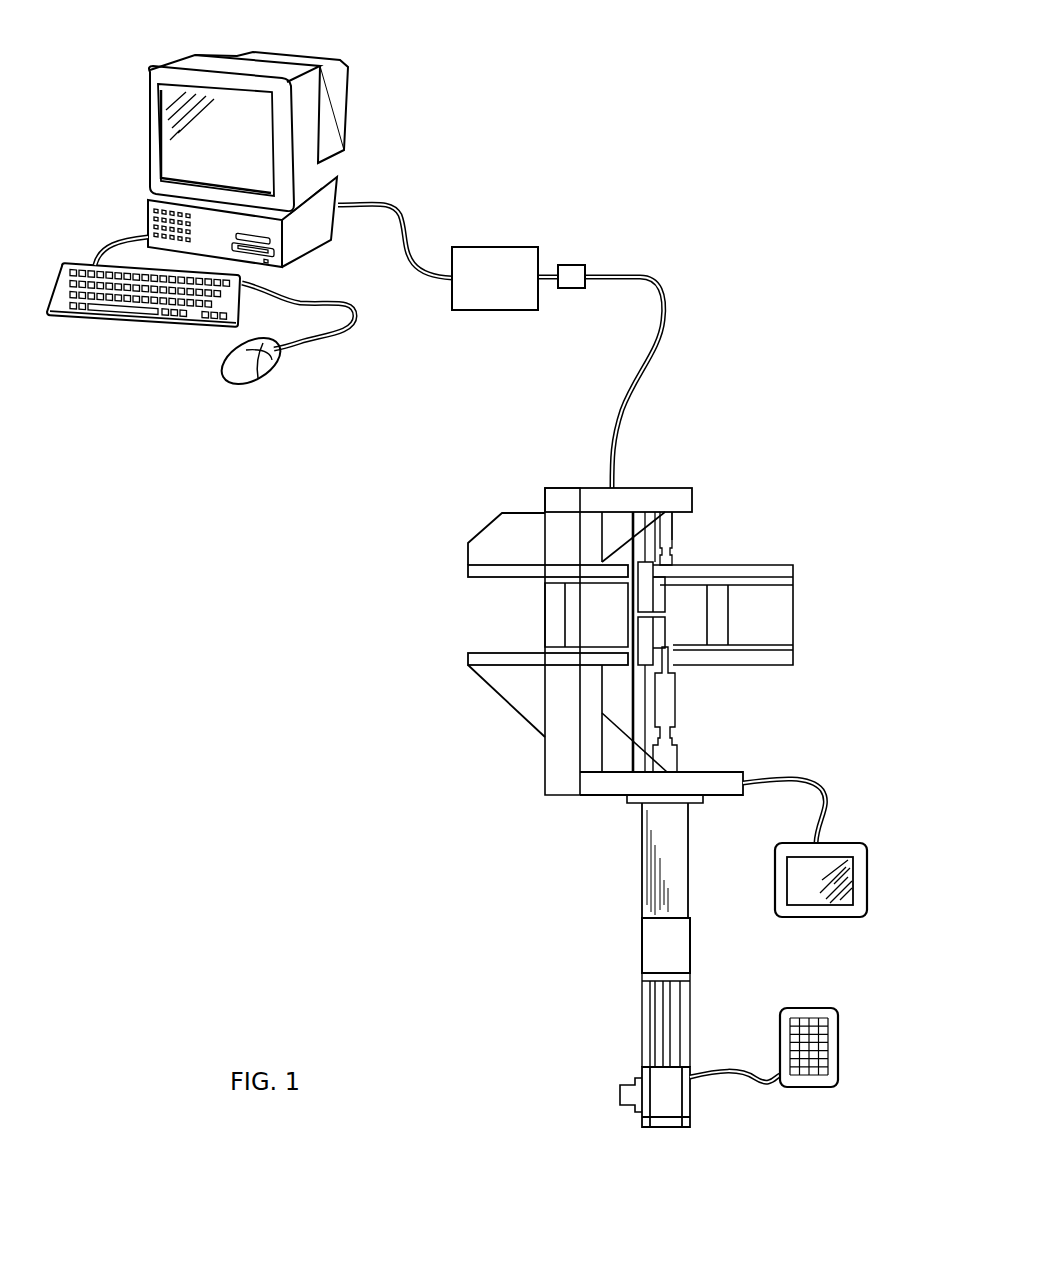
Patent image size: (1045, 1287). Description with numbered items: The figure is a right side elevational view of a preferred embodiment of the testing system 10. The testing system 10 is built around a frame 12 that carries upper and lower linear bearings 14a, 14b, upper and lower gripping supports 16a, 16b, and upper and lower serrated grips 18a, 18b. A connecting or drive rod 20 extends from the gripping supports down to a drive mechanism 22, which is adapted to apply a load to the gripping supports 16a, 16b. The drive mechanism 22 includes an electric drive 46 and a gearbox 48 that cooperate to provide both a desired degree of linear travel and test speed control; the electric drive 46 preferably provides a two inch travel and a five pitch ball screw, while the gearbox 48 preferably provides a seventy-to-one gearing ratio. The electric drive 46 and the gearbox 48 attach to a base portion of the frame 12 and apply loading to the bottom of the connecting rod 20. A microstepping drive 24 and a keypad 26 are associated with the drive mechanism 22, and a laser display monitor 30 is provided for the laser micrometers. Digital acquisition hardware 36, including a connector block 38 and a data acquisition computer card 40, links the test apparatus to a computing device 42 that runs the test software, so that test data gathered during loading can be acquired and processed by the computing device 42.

The testing system 10 is at (866, 107).
The frame 12 is at (665, 491).
The upper linear bearing 14a is at (647, 591).
The lower linear bearing 14b is at (647, 638).
The upper gripping support 16a is at (500, 530).
The lower gripping support 16b is at (510, 690).
The upper serrated grip 18a is at (490, 574).
The lower serrated grip 18b is at (493, 656).
The connecting rod 20 is at (670, 712).
The drive mechanism 22 is at (669, 986).
The microstepping drive 24 is at (665, 1120).
The keypad 26 is at (810, 1085).
The laser display monitor 30 is at (824, 914).
The digital acquisition hardware 36 is at (501, 311).
The connector block 38 is at (575, 288).
The data acquisition computer card 40 is at (496, 262).
The computing device 42 is at (395, 96).
The electric drive 46 is at (653, 945).
The gearbox 48 is at (668, 860).